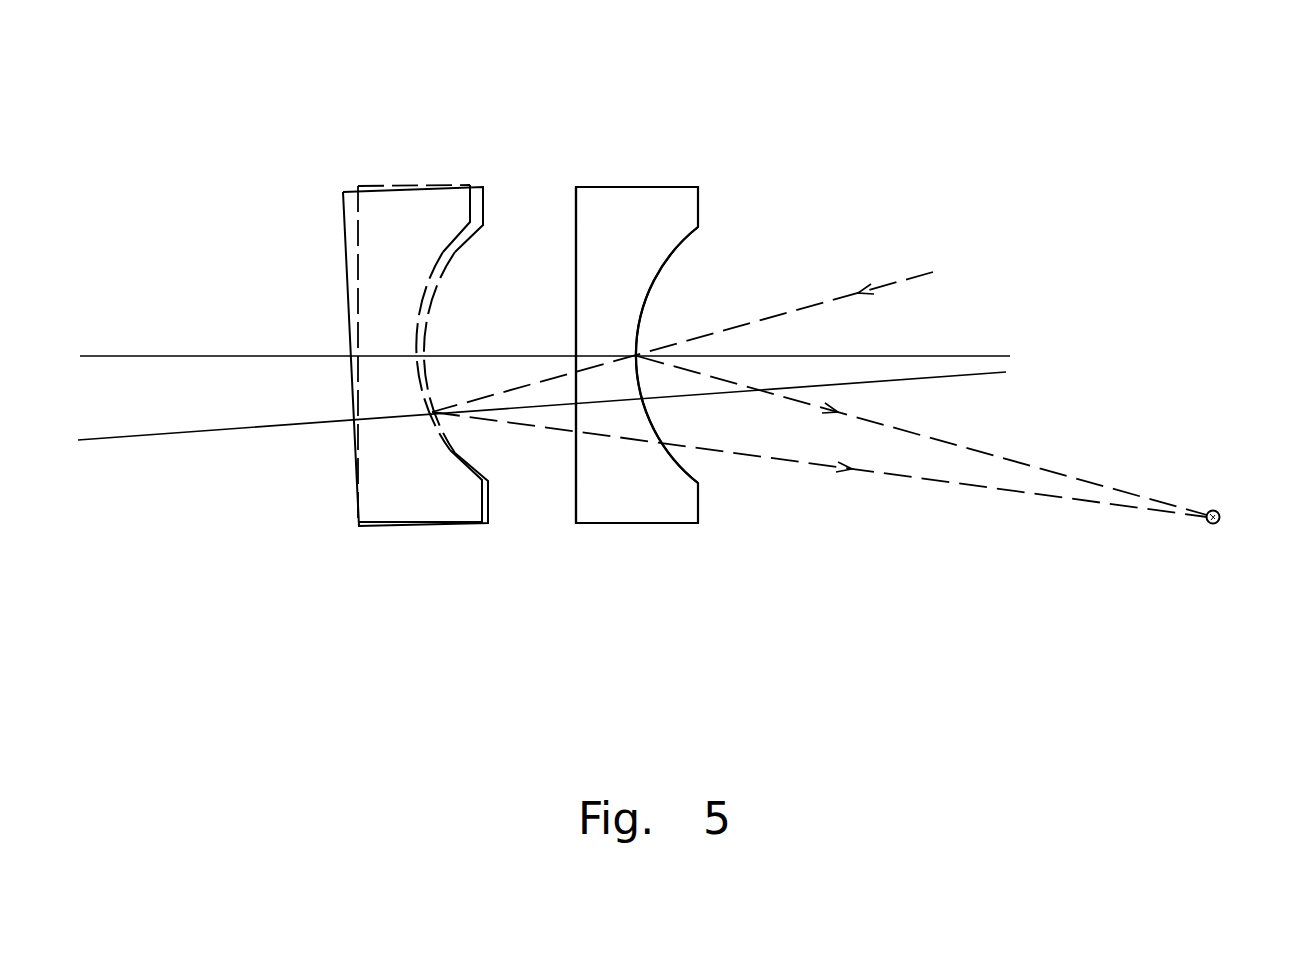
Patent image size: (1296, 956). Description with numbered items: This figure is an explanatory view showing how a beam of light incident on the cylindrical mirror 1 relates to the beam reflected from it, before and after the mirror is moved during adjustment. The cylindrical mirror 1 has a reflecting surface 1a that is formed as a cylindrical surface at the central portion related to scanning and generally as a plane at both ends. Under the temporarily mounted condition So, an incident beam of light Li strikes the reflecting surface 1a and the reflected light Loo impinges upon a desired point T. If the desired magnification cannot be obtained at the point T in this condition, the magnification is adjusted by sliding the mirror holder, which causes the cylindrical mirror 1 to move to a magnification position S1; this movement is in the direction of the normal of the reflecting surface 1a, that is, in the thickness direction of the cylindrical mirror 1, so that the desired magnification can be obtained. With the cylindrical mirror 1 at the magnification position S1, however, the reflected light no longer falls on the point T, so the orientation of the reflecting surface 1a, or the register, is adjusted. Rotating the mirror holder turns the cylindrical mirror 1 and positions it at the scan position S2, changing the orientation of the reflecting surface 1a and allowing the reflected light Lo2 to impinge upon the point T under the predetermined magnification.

The cylindrical mirror 1 is at (597, 197).
The reflecting surface 1a is at (676, 253).
The temporarily mounted condition So is at (653, 186).
The magnification position S1 is at (484, 205).
The scan position S2 is at (355, 191).
The incident beam of light Li is at (830, 300).
The reflected light Loo is at (1043, 467).
The reflected light Lo2 is at (1010, 490).
The desired point T is at (1236, 514).